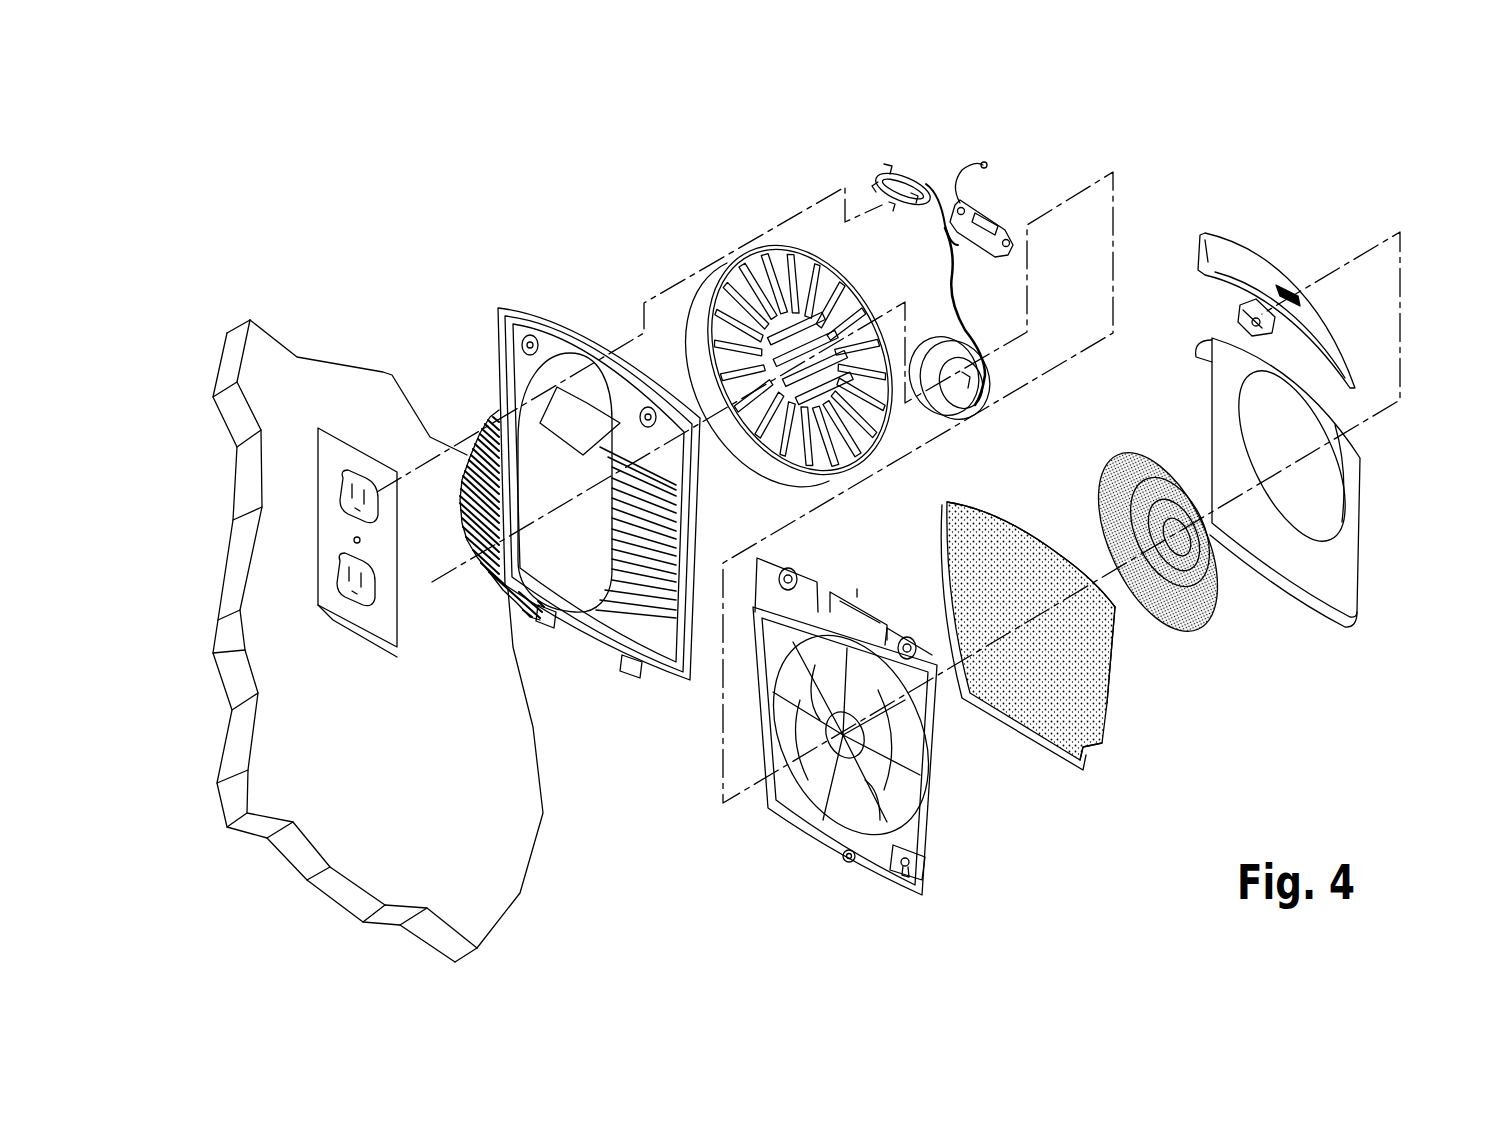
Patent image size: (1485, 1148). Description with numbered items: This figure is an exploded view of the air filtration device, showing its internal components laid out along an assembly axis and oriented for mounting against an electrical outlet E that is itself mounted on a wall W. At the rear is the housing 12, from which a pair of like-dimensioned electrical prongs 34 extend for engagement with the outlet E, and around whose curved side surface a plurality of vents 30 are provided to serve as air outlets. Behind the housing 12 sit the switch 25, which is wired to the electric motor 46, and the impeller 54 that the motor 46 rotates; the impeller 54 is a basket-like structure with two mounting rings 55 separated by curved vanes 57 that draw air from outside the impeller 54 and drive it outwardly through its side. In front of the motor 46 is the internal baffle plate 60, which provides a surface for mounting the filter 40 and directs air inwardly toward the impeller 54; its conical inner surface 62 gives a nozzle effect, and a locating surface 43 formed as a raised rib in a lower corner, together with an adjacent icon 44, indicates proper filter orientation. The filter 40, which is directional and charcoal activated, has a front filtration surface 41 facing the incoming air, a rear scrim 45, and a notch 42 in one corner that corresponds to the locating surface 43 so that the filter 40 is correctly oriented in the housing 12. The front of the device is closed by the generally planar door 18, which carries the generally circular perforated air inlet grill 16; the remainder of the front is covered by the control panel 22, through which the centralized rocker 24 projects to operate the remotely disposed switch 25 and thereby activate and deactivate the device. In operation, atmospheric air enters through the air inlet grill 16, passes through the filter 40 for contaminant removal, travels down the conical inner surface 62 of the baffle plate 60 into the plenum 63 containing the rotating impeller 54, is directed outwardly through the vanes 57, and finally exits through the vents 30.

The wall W is at (347, 395).
The electrical outlet E is at (370, 465).
The housing 12 is at (557, 300).
The air inlet grill 16 is at (1200, 630).
The door 18 is at (1345, 580).
The control panel 22 is at (1243, 257).
The rocker 24 is at (1237, 318).
The switch 25 is at (1000, 200).
The vents 30 is at (490, 420).
The electrical prongs 34 is at (882, 172).
The filter 40 is at (1117, 673).
The front filtration surface 41 is at (1046, 648).
The notch 42 is at (1092, 762).
The locating surface 43 is at (885, 872).
The icon 44 is at (888, 759).
The rear scrim 45 is at (940, 530).
The electric motor 46 is at (978, 405).
The impeller 54 is at (800, 283).
The mounting rings 55 is at (800, 283).
The vanes 57 is at (820, 280).
The internal baffle plate 60 is at (790, 792).
The conical inner surface 62 is at (851, 862).
The plenum 63 is at (547, 470).